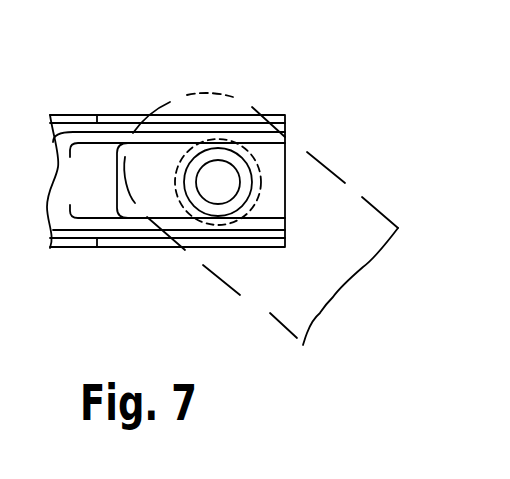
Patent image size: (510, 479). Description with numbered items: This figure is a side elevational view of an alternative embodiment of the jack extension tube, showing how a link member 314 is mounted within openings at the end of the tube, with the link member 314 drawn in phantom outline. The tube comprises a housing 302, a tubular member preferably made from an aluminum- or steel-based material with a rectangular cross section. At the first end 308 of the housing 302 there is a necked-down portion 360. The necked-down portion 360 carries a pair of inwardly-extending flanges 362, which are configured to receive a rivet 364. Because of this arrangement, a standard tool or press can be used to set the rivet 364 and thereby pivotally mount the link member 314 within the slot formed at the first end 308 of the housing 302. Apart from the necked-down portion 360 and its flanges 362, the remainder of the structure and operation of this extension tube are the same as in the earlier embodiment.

The housing 302 is at (92, 250).
The first end 308 is at (285, 222).
The link member 314 is at (330, 163).
The necked-down portion 360 is at (278, 97).
The inwardly-extending flanges 362 is at (243, 170).
The rivet 364 is at (287, 112).